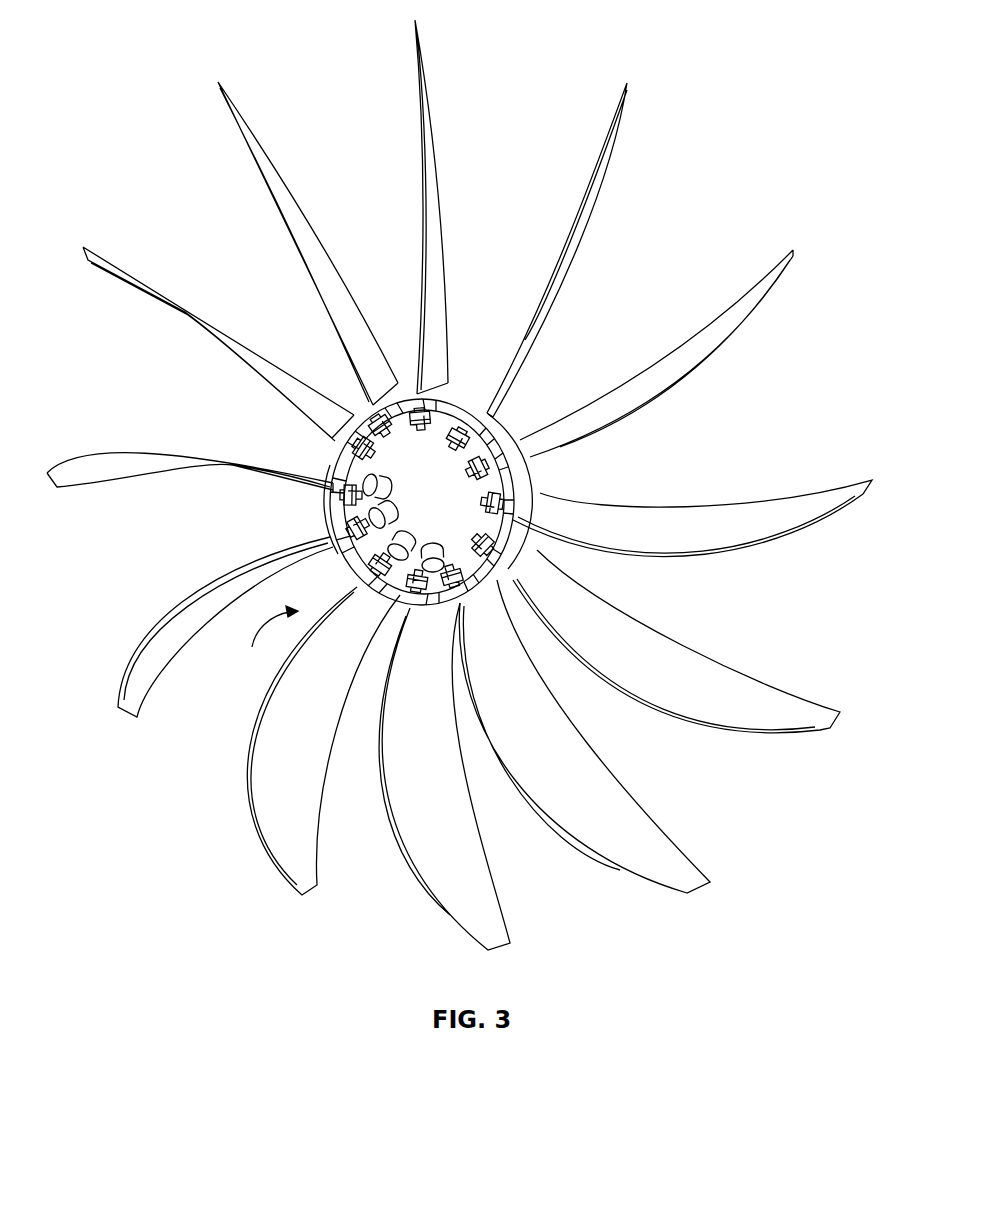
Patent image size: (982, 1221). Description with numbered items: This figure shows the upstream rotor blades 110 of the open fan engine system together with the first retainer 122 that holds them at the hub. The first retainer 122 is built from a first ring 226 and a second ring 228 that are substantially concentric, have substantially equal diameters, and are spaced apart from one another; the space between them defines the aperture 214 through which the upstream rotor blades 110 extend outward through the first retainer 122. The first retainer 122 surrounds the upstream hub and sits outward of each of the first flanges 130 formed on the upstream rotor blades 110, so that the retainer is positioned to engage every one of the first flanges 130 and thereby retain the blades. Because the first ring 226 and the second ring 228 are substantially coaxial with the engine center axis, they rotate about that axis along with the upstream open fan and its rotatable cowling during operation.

The upstream rotor blades 110 is at (232, 106).
The first flanges 130 is at (399, 398).
The aperture 214 is at (510, 433).
The first ring 226 is at (472, 450).
The second ring 228 is at (533, 483).
The first retainer 122 is at (266, 639).